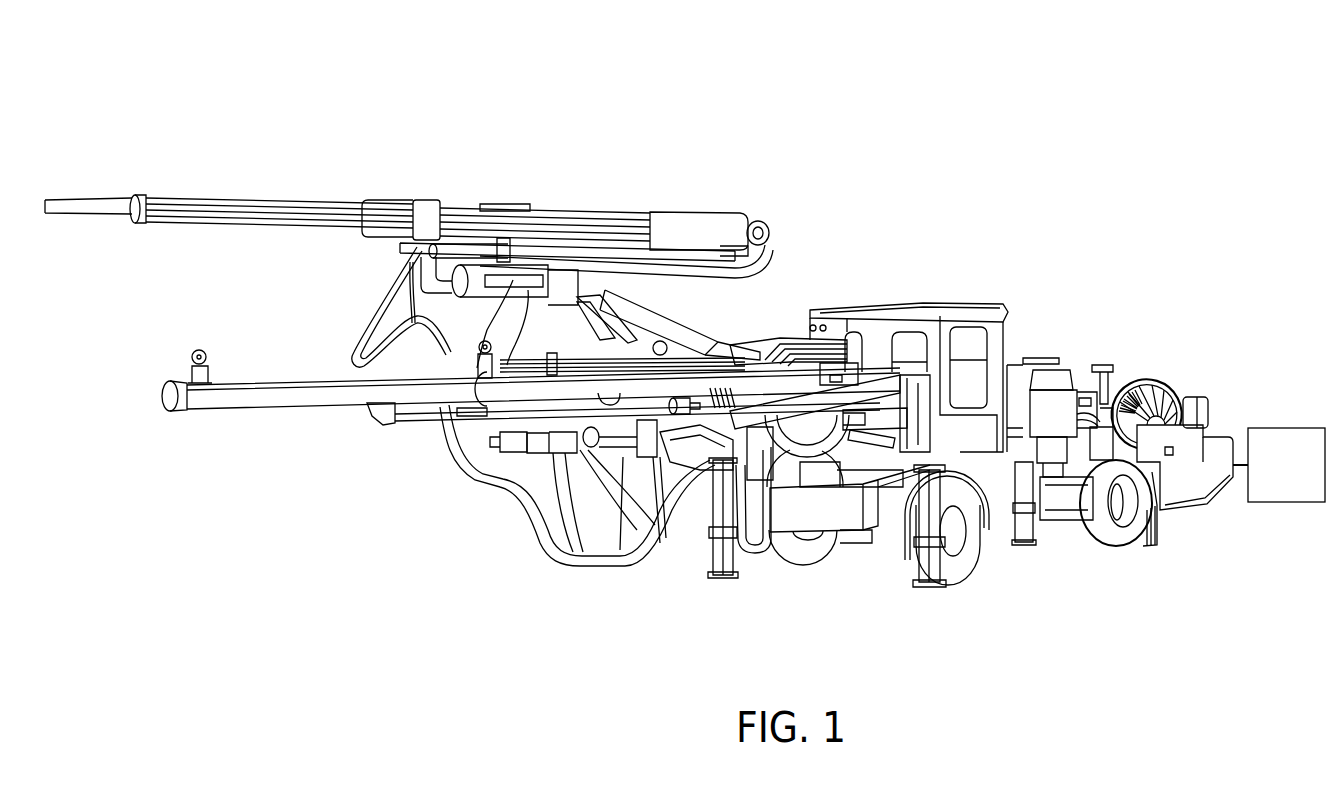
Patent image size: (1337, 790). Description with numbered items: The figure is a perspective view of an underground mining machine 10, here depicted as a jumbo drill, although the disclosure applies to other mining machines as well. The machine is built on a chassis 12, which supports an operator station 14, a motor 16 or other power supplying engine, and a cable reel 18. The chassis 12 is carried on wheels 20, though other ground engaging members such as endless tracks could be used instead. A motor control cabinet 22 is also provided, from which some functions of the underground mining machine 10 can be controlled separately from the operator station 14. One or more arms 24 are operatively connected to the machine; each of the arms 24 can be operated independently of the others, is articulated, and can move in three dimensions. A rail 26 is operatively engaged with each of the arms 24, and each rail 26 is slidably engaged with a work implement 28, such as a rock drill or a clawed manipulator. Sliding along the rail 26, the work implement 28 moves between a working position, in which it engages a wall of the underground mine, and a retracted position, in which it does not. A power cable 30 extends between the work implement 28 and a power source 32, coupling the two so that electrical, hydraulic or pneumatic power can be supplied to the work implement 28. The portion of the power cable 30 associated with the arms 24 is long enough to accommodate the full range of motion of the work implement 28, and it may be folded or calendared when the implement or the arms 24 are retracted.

The underground mining machine 10 is at (1087, 103).
The chassis 12 is at (890, 503).
The operator station 14 is at (1001, 304).
The motor 16 is at (1080, 388).
The cable reel 18 is at (1150, 378).
The wheels 20 is at (808, 553).
The motor control cabinet 22 is at (1223, 437).
The arms 24 is at (677, 336).
The rail 26 is at (568, 211).
The work implement 28 is at (80, 200).
The power cable 30 is at (772, 240).
The power source 32 is at (1276, 497).